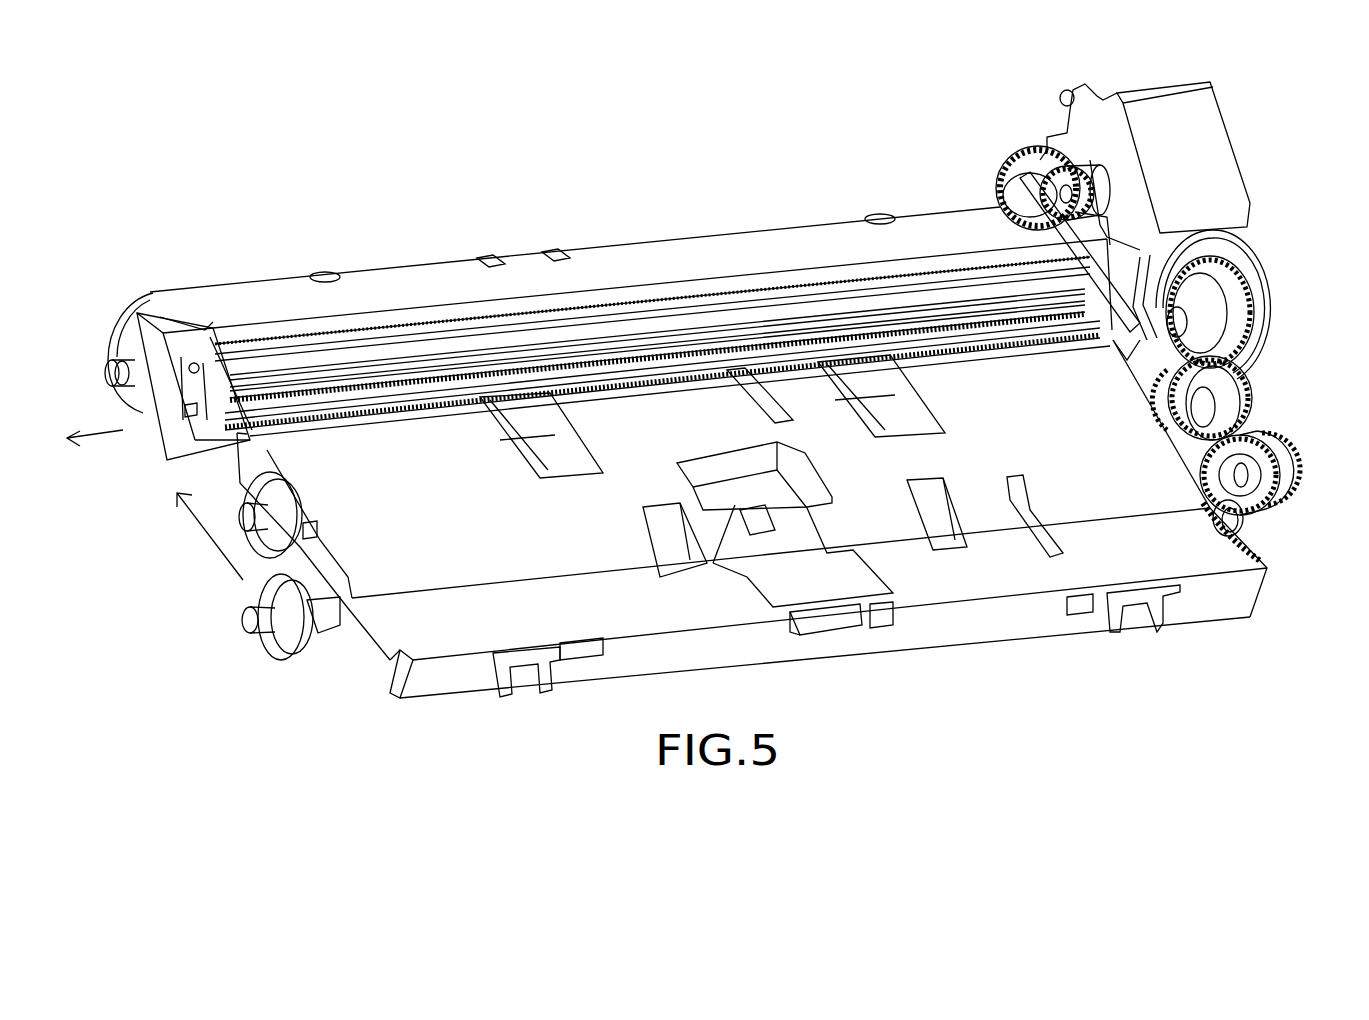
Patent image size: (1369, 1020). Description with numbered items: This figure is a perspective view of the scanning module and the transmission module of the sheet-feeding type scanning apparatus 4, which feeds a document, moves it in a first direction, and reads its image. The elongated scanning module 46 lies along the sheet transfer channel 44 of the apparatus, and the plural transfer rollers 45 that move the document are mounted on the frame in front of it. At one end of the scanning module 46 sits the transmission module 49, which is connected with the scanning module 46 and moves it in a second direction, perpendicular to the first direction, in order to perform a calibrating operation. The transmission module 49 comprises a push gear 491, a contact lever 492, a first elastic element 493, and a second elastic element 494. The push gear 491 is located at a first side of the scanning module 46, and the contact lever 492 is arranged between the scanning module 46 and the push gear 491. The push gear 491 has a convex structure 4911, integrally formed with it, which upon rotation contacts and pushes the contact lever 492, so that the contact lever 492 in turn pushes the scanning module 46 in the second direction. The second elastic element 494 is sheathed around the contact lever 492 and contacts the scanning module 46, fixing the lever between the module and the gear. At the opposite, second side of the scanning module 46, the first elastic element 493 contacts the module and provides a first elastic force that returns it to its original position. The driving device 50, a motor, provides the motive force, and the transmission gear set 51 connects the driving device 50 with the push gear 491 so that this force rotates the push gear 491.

The sheet-feeding type scanning apparatus 4 is at (638, 173).
The sheet transfer channel 44 is at (397, 433).
The transfer rollers 45 is at (567, 457).
The scanning module 46 is at (482, 345).
The transmission module 49 is at (1124, 262).
The push gear 491 is at (1253, 343).
The contact lever 492 is at (1227, 223).
The first elastic element 493 is at (250, 436).
The second elastic element 494 is at (1000, 182).
The convex structure 4911 is at (1233, 277).
The driving device 50 is at (1215, 155).
The transmission gear set 51 is at (1297, 450).